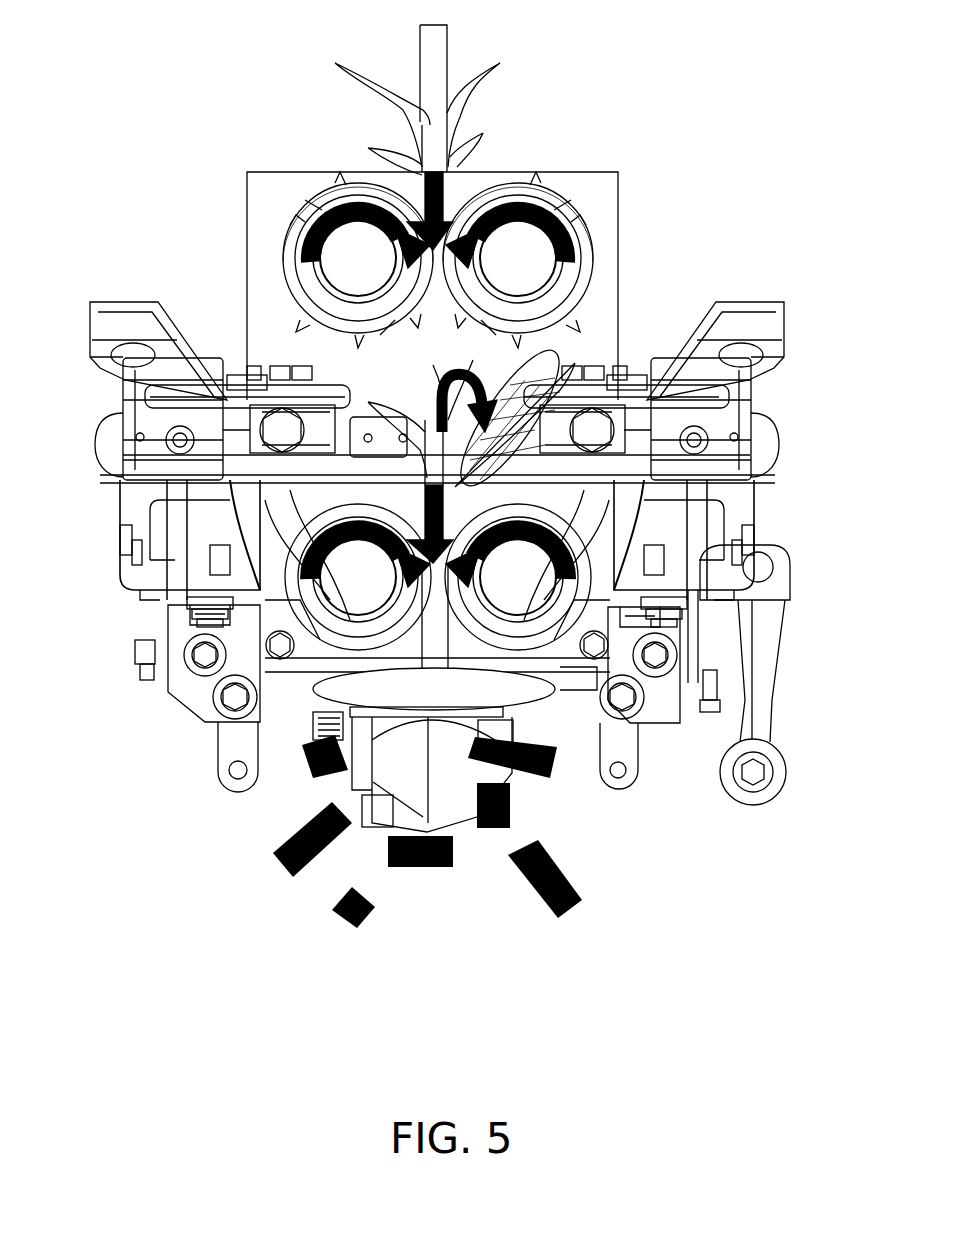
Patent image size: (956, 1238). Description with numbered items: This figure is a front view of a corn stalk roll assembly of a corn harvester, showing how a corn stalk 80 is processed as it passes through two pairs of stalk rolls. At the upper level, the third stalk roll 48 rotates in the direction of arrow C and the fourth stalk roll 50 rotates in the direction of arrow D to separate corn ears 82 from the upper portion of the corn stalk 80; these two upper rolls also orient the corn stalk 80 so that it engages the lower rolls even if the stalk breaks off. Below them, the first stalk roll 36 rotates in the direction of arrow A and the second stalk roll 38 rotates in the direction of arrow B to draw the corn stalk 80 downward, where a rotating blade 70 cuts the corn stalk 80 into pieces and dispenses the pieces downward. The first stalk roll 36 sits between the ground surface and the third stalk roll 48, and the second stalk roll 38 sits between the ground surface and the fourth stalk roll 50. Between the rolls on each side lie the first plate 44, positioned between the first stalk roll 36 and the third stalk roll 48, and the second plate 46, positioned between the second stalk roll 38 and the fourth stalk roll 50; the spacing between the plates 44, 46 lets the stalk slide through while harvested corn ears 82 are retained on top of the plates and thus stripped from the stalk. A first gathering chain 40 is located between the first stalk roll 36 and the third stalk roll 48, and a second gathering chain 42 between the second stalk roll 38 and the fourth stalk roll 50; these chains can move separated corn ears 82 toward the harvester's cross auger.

The corn stalk 80 is at (438, 137).
The corn ears 82 is at (555, 348).
The fourth stalk roll 50 is at (345, 268).
The third stalk roll 48 is at (525, 268).
The arrow D is at (345, 200).
The arrow C is at (555, 200).
The arrow B is at (330, 488).
The arrow A is at (545, 488).
The second gathering chain 42 is at (160, 378).
The first gathering chain 40 is at (715, 380).
The second plate 46 is at (200, 448).
The first plate 44 is at (700, 455).
The second stalk roll 38 is at (205, 655).
The first stalk roll 36 is at (655, 655).
The rotating blade 70 is at (555, 722).